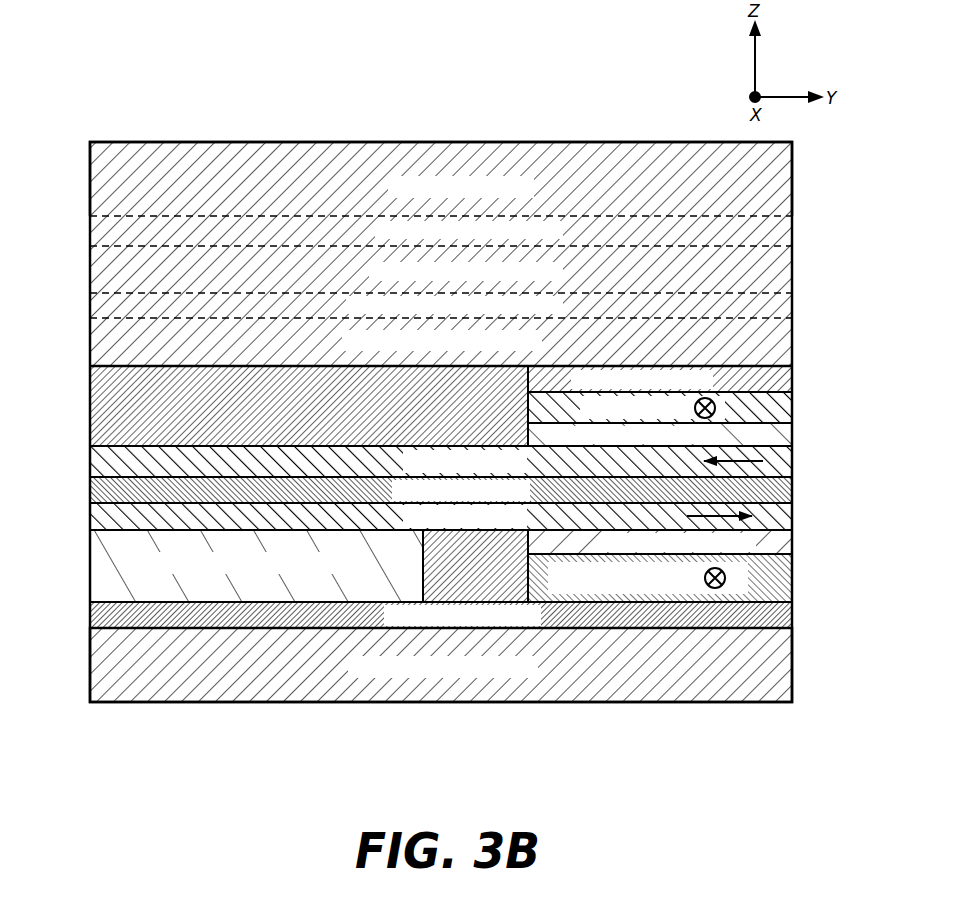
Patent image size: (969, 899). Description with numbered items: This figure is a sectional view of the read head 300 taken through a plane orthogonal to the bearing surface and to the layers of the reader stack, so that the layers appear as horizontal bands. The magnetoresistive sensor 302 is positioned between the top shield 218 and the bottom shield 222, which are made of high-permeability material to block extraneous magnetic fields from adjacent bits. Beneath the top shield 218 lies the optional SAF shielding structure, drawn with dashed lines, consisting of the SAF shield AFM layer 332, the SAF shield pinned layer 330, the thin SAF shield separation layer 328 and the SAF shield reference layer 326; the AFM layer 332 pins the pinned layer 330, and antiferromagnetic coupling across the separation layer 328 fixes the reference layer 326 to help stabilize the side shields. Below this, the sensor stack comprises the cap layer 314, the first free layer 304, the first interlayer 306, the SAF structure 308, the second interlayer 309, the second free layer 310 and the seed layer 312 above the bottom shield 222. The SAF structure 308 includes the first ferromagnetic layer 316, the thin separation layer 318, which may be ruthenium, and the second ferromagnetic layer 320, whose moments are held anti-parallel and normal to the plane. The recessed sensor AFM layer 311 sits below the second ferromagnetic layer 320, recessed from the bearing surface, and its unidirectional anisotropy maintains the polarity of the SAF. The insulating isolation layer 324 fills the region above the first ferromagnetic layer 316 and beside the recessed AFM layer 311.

The read head 300 is at (115, 104).
The top shield 218 is at (441, 179).
The SAF shield AFM layer 332 is at (441, 231).
The SAF shield pinned layer 330 is at (441, 269).
The SAF shield separation layer 328 is at (441, 305).
The SAF shield reference layer 326 is at (441, 342).
The isolation layer 324 is at (210, 397).
The magnetoresistive sensor 302 is at (822, 417).
The cap layer 314 is at (660, 379).
The first free layer 304 is at (660, 407).
The first interlayer 306 is at (660, 434).
The first ferromagnetic layer 316 is at (441, 461).
The SAF structure 308 is at (793, 528).
The separation layer 318 is at (441, 490).
The second ferromagnetic layer 320 is at (441, 516).
The recessed sensor AFM layer 311 is at (256, 566).
The second interlayer 309 is at (660, 542).
The second free layer 310 is at (660, 578).
The seed layer 312 is at (441, 615).
The bottom shield 222 is at (441, 665).